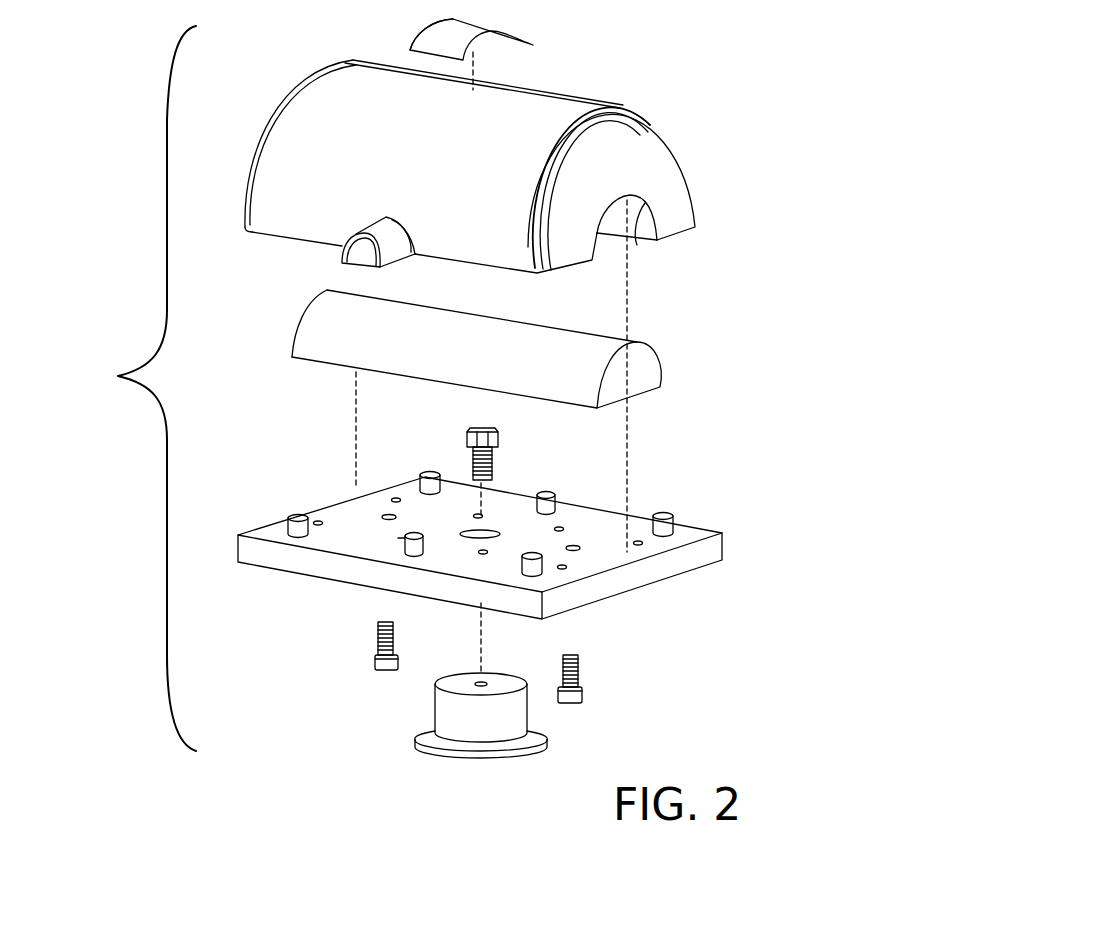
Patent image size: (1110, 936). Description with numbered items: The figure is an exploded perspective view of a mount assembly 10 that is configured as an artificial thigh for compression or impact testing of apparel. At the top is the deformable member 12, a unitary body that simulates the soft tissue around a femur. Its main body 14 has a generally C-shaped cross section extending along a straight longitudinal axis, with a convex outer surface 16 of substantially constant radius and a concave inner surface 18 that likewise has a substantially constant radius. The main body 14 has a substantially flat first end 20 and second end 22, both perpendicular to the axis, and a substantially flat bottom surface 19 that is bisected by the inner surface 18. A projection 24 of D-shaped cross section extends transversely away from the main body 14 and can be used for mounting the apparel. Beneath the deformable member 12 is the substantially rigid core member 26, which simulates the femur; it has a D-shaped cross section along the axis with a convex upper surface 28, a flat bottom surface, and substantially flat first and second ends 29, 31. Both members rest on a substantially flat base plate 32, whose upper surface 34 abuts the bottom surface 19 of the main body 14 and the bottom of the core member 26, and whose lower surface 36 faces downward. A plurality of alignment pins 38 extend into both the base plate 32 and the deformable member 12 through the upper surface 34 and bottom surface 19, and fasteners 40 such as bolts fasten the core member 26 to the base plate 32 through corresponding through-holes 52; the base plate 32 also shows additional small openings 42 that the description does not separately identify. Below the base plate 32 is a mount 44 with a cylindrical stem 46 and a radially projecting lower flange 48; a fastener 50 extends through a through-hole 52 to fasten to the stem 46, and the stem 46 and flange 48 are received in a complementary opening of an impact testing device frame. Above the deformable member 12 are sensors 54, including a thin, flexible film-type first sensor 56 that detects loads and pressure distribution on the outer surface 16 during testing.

The mount assembly 10 is at (134, 388).
The deformable member 12 is at (492, 284).
The main body 14 is at (532, 104).
The convex outer surface 16 is at (417, 177).
The concave inner surface 18 is at (637, 245).
The bottom surface 19 is at (568, 266).
The first end 20 is at (665, 170).
The second end 22 is at (260, 157).
The projection 24 is at (393, 248).
The core member 26 is at (482, 370).
The convex upper surface 28 is at (466, 360).
The first end 29 is at (640, 368).
The second end 31 is at (298, 322).
The base plate 32 is at (478, 538).
The upper surface 34 is at (424, 527).
The lower surface 36 is at (272, 553).
The alignment pins 38 is at (296, 515).
The fasteners 40 is at (372, 662).
The holes 42 is at (389, 514).
The mount 44 is at (481, 716).
The cylindrical stem 46 is at (517, 708).
The lower flange 48 is at (508, 748).
The fastener 50 is at (492, 432).
The through-hole 52 is at (486, 536).
The sensors 54 is at (483, 45).
The first sensor 56 is at (443, 40).